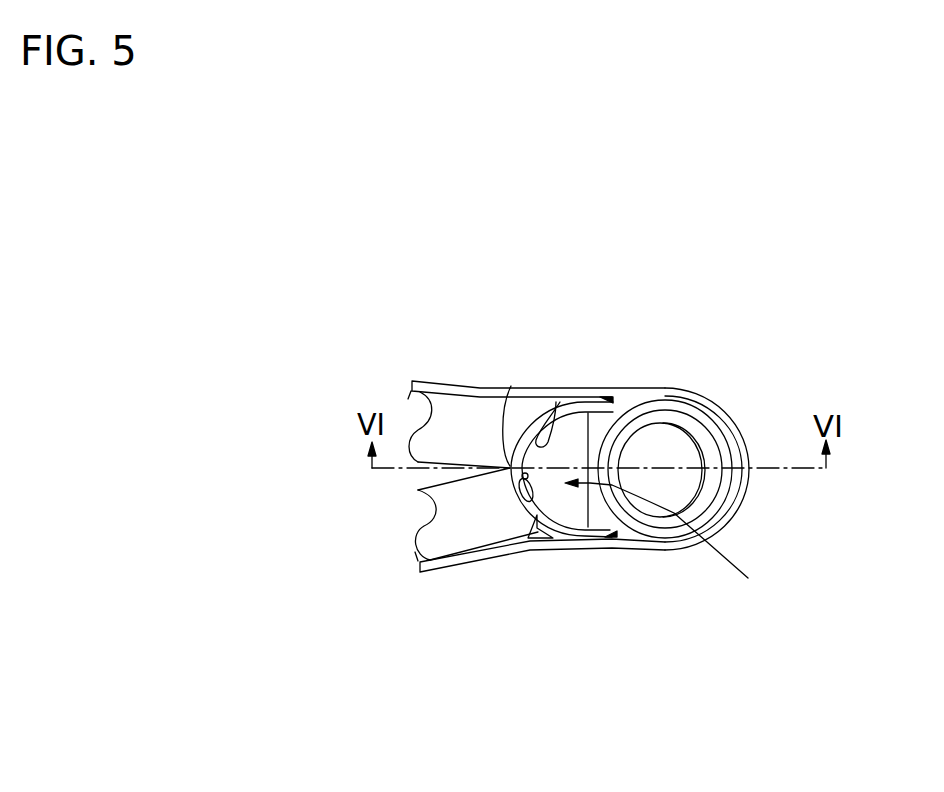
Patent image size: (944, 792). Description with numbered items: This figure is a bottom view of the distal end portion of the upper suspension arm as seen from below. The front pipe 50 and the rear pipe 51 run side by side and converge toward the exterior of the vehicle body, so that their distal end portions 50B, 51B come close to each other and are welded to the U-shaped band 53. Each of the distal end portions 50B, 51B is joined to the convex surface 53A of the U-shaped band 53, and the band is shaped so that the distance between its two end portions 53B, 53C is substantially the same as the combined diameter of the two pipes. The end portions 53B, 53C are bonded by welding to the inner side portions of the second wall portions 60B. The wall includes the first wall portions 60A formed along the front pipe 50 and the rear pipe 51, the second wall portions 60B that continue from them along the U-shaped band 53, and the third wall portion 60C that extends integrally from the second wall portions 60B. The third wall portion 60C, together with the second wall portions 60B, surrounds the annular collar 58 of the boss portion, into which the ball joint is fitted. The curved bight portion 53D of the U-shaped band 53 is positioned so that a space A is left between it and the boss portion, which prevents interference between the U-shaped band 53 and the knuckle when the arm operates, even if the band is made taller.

The front pipe 50 is at (472, 417).
The distal end portion of the front pipe 50B is at (547, 400).
The rear pipe 51 is at (475, 530).
The distal end portion of the rear pipe 51B is at (527, 540).
The U-shaped band 53 is at (518, 478).
The convex surface 53A is at (511, 386).
The end portion of the U-shaped band 53B is at (600, 545).
The end portion of the U-shaped band 53C is at (617, 390).
The curved bight portion 53D is at (516, 488).
The annular collar 58 is at (705, 428).
The first wall portions 60A is at (452, 567).
The second wall portions 60B is at (647, 390).
The third wall portion 60C is at (743, 487).
The space A is at (667, 540).